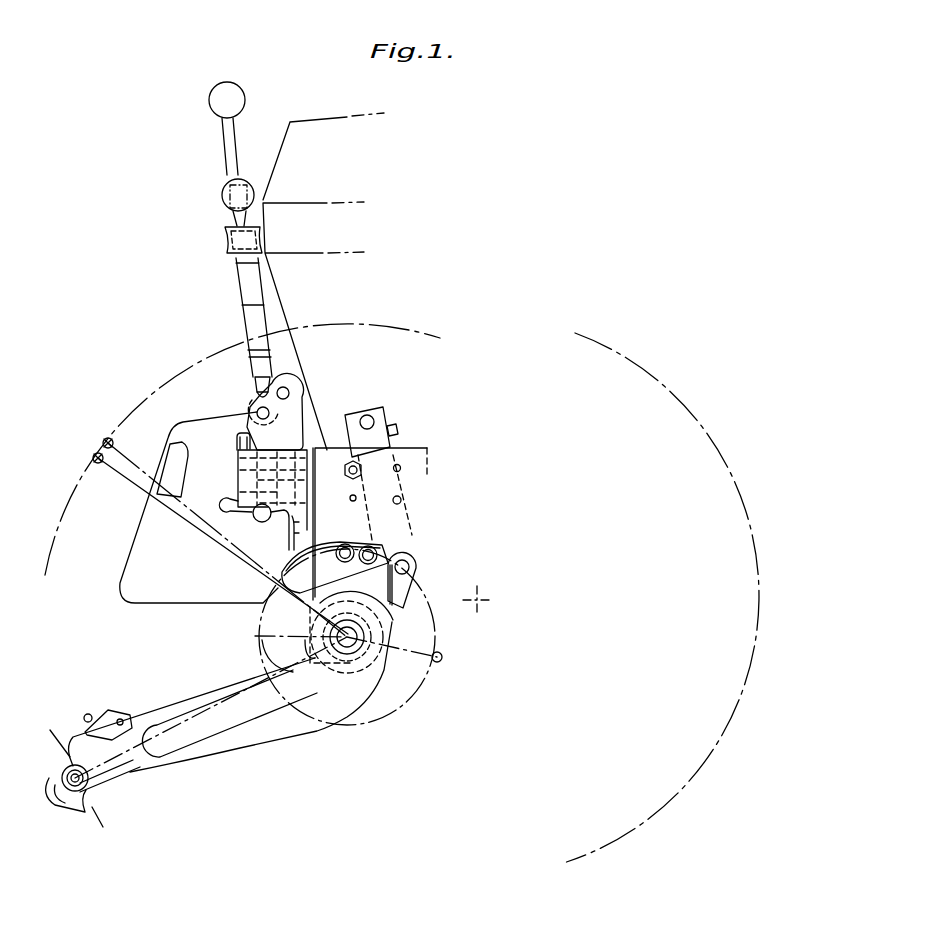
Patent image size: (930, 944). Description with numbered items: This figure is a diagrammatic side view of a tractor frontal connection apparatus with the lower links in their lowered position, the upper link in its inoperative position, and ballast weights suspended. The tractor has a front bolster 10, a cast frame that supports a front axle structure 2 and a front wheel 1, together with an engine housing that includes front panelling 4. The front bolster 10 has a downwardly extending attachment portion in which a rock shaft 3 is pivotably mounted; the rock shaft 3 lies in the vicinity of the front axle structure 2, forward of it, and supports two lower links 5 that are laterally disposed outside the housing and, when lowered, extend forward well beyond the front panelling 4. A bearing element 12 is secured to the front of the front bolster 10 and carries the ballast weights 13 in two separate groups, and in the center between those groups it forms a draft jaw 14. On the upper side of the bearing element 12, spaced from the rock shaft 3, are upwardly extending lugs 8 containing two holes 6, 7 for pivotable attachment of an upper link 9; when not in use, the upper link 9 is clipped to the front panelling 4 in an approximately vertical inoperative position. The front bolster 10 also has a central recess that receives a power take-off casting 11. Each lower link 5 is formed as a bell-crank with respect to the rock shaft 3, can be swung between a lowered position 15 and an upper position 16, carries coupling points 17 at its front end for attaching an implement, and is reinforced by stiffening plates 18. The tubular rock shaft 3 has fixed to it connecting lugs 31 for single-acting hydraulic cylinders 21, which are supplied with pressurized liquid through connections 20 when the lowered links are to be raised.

The front wheel 1 is at (672, 396).
The front axle structure 2 is at (480, 597).
The rock shaft 3 is at (349, 639).
The front panelling 4 is at (260, 300).
The lower links 5 is at (237, 750).
The hole 6 is at (289, 393).
The hole 7 is at (257, 407).
The upwardly extending lugs 8 is at (288, 380).
The upper link 9 is at (243, 265).
The front bolster 10 is at (346, 504).
The power take-off casting 11 is at (285, 565).
The bearing element 12 is at (292, 492).
The ballast weights 13 is at (224, 482).
The draft jaw 14 is at (230, 452).
The lowered position 15 is at (110, 790).
The upper position 16 is at (104, 439).
The coupling points 17 is at (70, 796).
The stiffening plates 18 is at (187, 747).
The connections 20 is at (391, 426).
The hydraulic cylinders 21 is at (365, 413).
The connecting lugs 31 is at (408, 567).